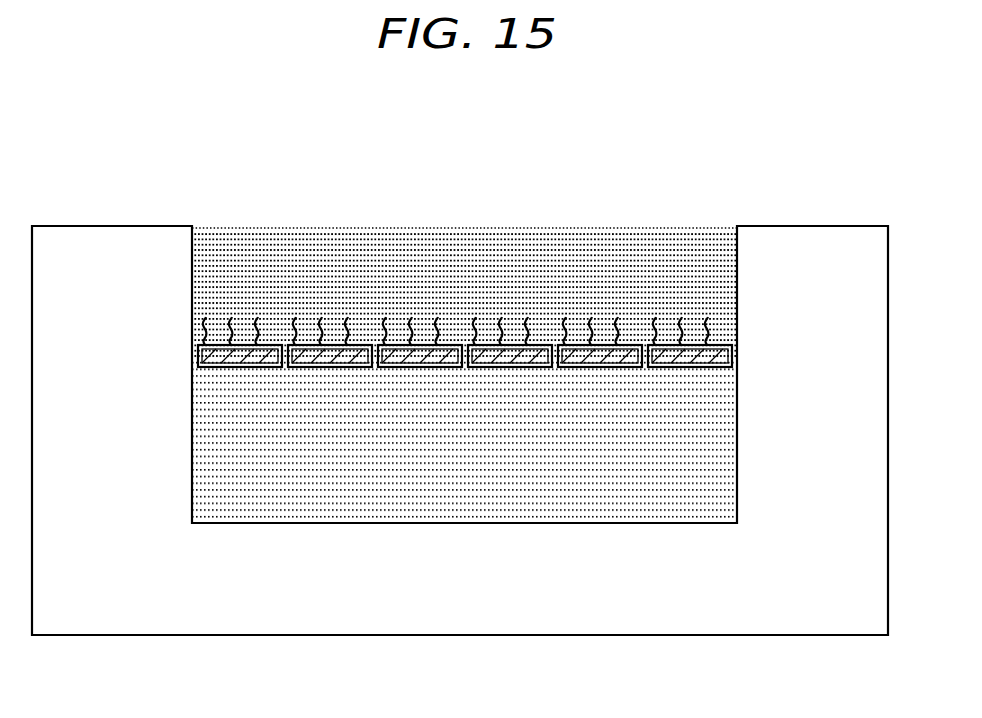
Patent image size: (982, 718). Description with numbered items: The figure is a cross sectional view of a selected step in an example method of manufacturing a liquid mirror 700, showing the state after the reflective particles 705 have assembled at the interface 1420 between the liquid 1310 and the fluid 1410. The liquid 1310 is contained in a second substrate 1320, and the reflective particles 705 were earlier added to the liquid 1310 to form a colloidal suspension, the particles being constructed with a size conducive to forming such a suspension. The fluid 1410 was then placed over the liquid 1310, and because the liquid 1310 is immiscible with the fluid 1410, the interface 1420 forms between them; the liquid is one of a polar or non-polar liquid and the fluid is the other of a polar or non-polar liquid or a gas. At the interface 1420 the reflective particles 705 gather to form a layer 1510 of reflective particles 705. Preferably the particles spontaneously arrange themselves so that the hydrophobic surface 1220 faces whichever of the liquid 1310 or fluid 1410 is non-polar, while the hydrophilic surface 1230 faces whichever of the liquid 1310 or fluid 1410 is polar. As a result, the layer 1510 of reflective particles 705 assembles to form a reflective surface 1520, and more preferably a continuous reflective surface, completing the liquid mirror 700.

The liquid mirror 700 is at (213, 124).
The reflective particles 705 is at (633, 258).
The hydrophobic surface 1220 is at (485, 300).
The hydrophilic surface 1230 is at (488, 385).
The liquid 1310 is at (282, 491).
The second substrate 1320 is at (866, 617).
The fluid 1410 is at (267, 271).
The interface 1420 is at (748, 318).
The layer of reflective particles 1510 is at (180, 356).
The reflective surface 1520 is at (388, 248).